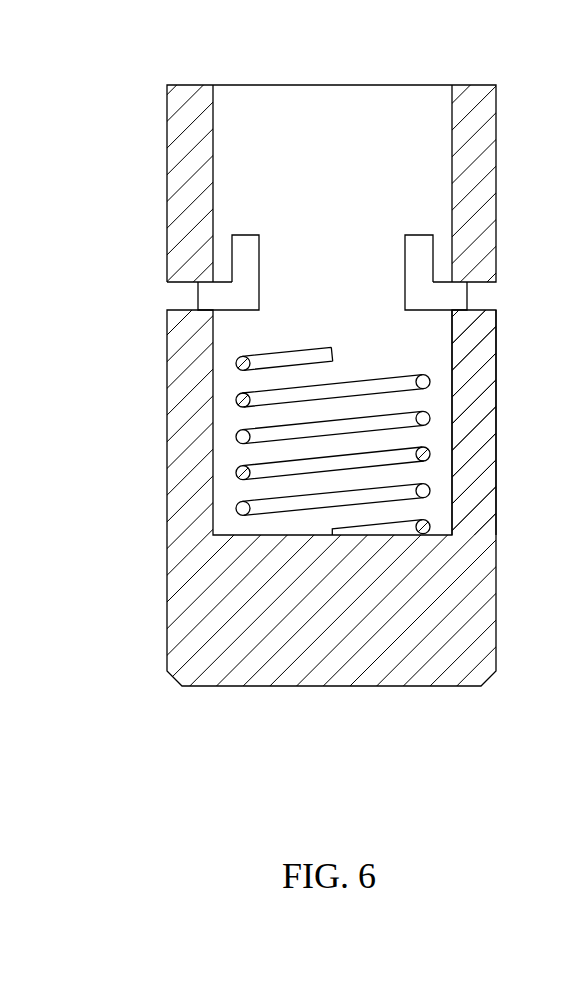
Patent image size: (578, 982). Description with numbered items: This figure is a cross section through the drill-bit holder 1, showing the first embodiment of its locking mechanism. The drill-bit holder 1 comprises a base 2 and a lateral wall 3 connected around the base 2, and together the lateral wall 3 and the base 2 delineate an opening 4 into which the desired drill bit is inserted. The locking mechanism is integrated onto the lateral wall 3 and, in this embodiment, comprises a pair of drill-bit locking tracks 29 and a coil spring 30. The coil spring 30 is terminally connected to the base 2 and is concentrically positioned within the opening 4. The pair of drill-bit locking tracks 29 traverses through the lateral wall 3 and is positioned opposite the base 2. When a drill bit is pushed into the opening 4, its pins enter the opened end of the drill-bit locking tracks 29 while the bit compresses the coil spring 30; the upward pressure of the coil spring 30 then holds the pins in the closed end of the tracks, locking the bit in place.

The drill-bit holder 1 is at (141, 135).
The base 2 is at (484, 641).
The lateral wall 3 is at (481, 349).
The opening 4 is at (350, 108).
The pair of drill-bit locking tracks 29 is at (418, 235).
The coil spring 30 is at (385, 380).